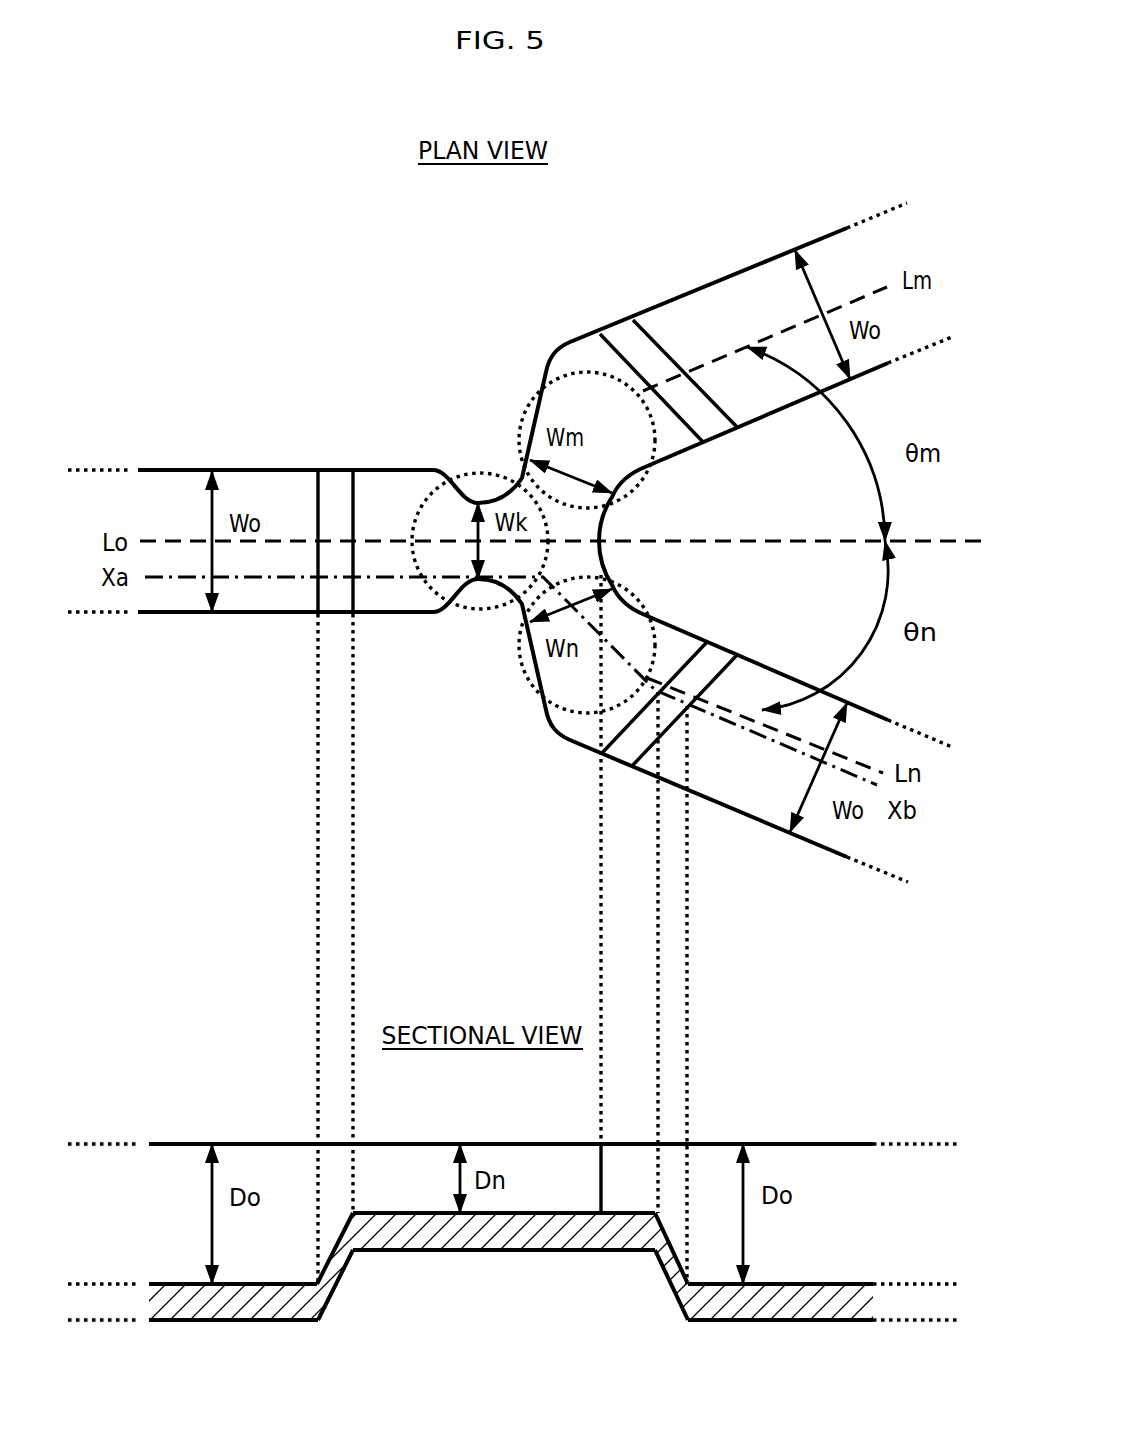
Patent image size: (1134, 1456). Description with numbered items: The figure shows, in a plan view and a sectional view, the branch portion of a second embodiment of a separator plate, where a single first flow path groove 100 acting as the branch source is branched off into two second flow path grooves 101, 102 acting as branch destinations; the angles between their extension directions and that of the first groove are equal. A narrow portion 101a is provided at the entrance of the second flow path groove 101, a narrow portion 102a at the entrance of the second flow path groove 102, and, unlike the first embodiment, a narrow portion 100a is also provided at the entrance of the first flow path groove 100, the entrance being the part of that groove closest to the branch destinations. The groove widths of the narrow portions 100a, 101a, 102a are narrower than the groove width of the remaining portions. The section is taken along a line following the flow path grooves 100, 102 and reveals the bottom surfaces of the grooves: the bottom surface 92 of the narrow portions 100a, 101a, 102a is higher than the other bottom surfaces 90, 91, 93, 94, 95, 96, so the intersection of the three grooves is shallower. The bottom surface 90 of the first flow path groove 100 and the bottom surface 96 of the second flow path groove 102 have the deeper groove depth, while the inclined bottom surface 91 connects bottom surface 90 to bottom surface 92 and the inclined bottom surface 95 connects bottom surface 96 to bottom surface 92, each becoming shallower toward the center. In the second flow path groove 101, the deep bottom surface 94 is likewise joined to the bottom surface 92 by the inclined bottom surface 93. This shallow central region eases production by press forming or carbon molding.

The bottom surface 90 is at (164, 522).
The bottom surface 91 is at (335, 480).
The bottom surface 92 is at (375, 522).
The bottom surface 93 is at (623, 337).
The bottom surface 94 is at (694, 342).
The bottom surface 95 is at (622, 745).
The bottom surface 96 is at (694, 772).
The first flow path groove 100 is at (247, 470).
The narrow portion 100a is at (470, 475).
The second flow path groove 101 is at (703, 290).
The narrow portion 101a is at (643, 473).
The second flow path groove 102 is at (795, 678).
The narrow portion 102a is at (643, 610).